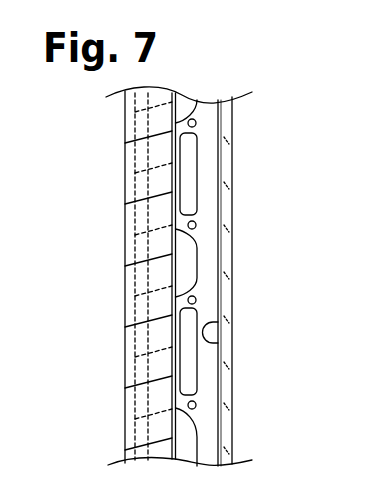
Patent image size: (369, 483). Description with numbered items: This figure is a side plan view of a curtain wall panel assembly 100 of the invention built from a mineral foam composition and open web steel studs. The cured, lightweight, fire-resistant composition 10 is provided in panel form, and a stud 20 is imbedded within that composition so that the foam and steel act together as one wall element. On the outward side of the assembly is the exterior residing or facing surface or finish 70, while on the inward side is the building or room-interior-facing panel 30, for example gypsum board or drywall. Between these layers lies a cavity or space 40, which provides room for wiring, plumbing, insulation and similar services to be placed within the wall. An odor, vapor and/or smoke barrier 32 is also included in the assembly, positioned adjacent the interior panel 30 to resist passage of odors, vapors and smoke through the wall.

The panel assembly 100 is at (276, 133).
The lightweight, fire-resistant composition 10 is at (127, 180).
The exterior residing/facing surface or finish 70 is at (125, 259).
The stud 20 is at (208, 356).
The cavity or space 40 is at (188, 269).
The building/room-interior-residing/facing panel 30 is at (225, 222).
The odor, vapor and/or smoke barrier 32 is at (213, 326).